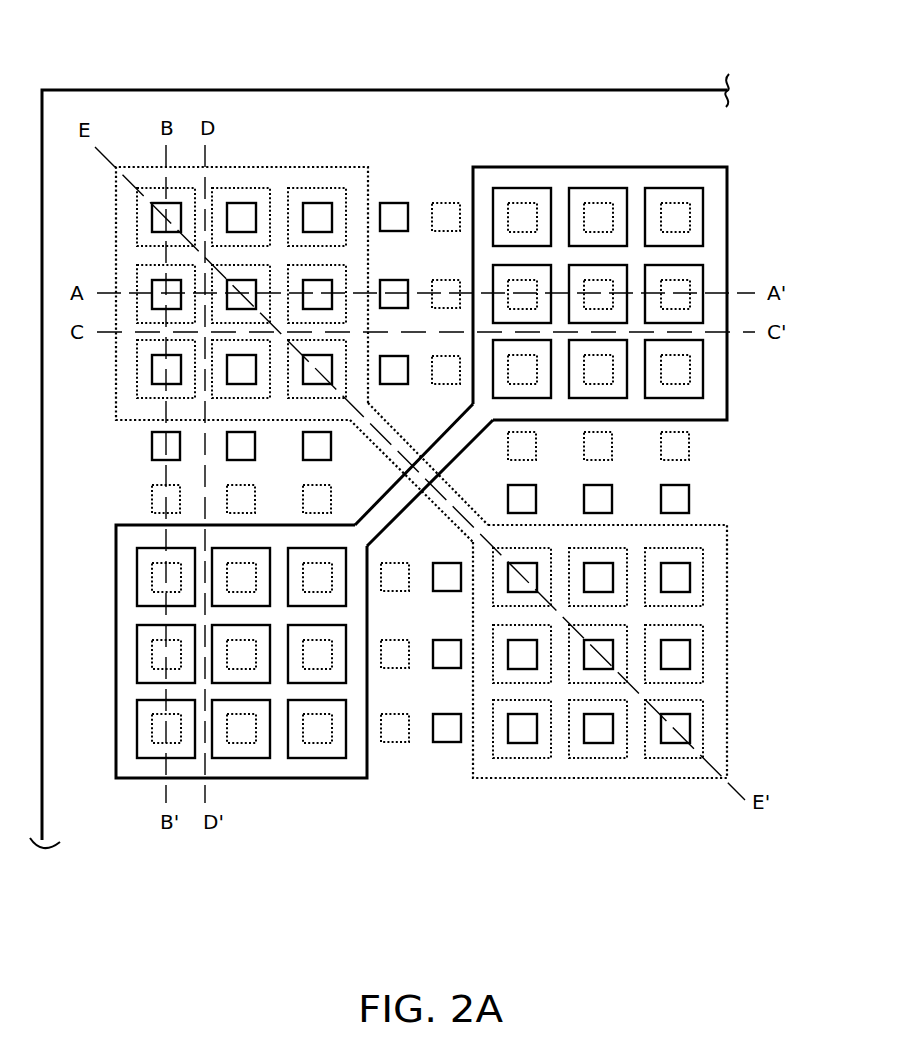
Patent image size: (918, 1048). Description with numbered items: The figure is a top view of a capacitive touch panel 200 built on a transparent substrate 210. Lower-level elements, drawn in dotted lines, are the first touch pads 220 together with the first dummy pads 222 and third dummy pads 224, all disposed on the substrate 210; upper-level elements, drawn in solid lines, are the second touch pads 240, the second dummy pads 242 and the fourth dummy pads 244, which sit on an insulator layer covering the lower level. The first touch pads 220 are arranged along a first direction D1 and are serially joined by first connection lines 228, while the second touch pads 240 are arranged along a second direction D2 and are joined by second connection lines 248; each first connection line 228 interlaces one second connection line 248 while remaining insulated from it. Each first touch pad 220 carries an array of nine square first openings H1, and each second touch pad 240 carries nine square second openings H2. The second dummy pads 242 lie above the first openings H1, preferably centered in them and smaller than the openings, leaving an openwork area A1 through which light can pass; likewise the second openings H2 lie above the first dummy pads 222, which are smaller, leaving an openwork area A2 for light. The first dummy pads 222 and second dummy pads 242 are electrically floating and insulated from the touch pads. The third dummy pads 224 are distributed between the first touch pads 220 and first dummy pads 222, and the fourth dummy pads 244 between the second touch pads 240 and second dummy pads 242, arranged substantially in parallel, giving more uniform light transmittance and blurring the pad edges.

The capacitive touch panel 200 is at (783, 877).
The substrate 210 is at (123, 107).
The first touch pads 220 is at (235, 178).
The first dummy pads 222 is at (520, 212).
The third dummy pads 224 is at (448, 200).
The first connection lines 228 is at (375, 438).
The second touch pads 240 is at (592, 175).
The second dummy pads 242 is at (318, 192).
The fourth dummy pads 244 is at (397, 200).
The second connection lines 248 is at (402, 502).
The first opening H1 is at (297, 190).
The second opening H2 is at (543, 195).
The openwork area A1 is at (335, 192).
The openwork area A2 is at (692, 193).
The first direction D1 is at (727, 442).
The second direction D2 is at (727, 507).